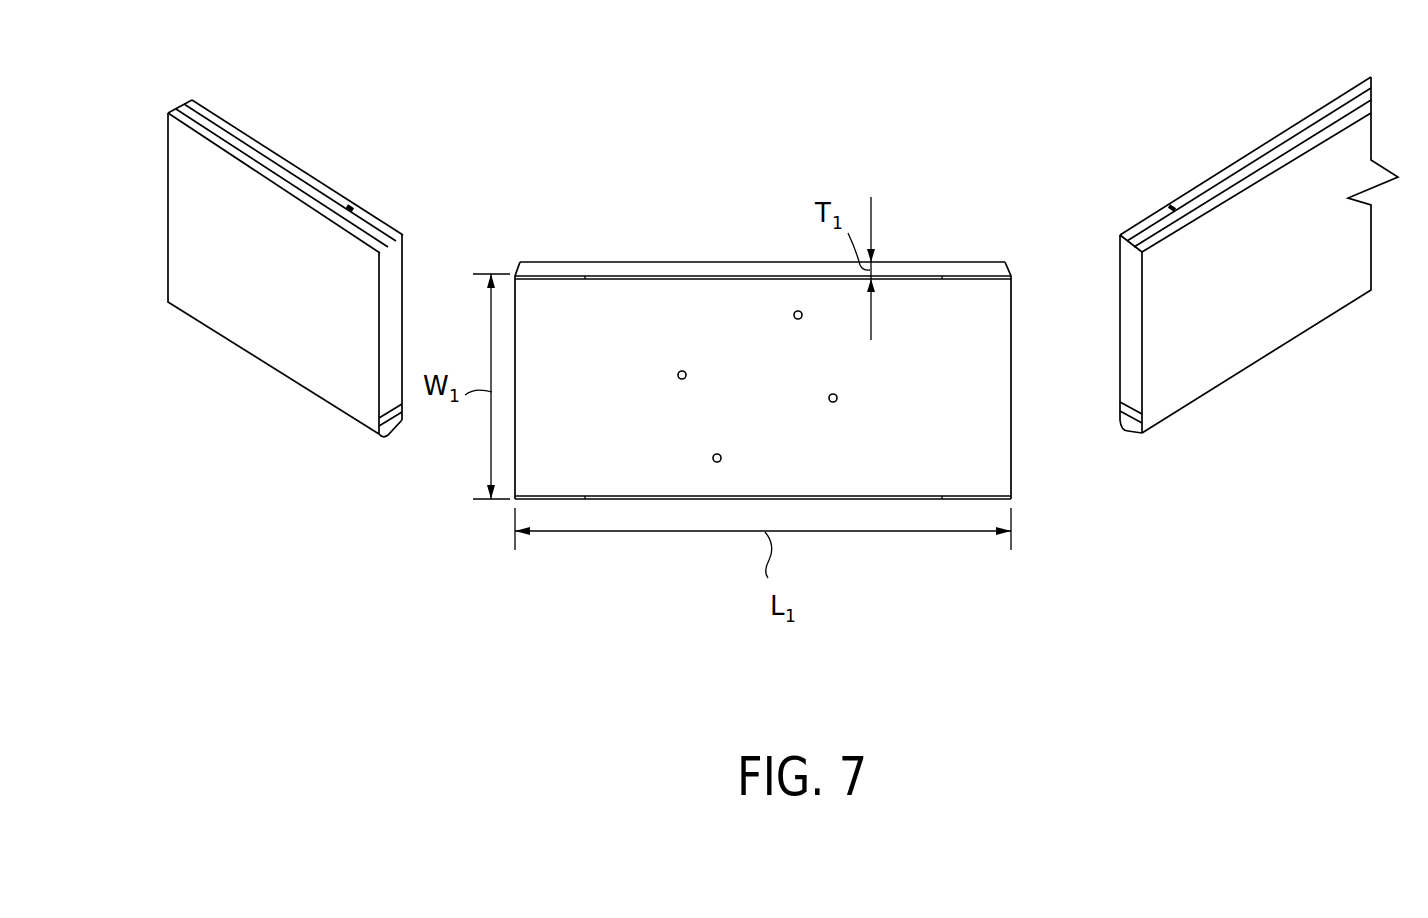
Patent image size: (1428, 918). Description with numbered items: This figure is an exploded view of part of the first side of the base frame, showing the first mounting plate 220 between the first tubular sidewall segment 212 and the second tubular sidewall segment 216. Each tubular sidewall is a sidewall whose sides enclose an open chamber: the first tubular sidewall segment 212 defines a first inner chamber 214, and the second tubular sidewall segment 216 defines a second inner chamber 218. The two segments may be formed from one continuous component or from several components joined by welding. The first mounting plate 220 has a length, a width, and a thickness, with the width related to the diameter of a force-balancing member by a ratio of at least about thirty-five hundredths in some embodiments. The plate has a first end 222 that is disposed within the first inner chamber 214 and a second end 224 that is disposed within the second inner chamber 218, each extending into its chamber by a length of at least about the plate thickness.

The first tubular sidewall segment 212 is at (327, 313).
The first inner chamber 214 is at (395, 384).
The second tubular sidewall segment 216 is at (1207, 237).
The second inner chamber 218 is at (1120, 401).
The first mounting plate 220 is at (733, 307).
The first end 222 is at (517, 272).
The second end 224 is at (1008, 267).